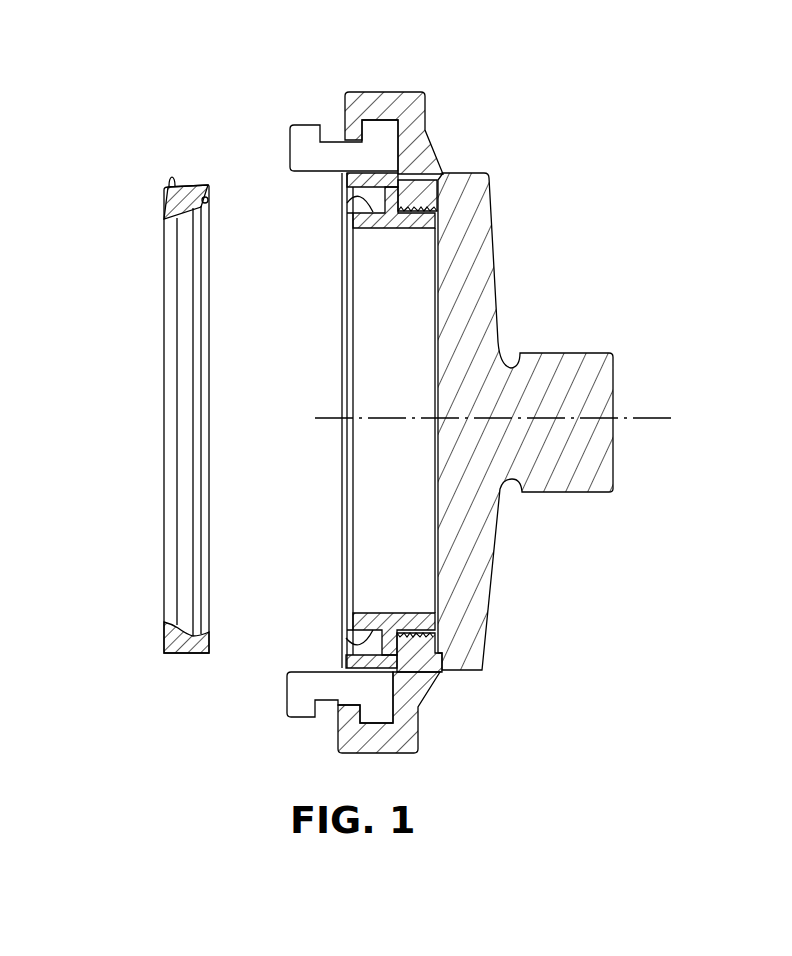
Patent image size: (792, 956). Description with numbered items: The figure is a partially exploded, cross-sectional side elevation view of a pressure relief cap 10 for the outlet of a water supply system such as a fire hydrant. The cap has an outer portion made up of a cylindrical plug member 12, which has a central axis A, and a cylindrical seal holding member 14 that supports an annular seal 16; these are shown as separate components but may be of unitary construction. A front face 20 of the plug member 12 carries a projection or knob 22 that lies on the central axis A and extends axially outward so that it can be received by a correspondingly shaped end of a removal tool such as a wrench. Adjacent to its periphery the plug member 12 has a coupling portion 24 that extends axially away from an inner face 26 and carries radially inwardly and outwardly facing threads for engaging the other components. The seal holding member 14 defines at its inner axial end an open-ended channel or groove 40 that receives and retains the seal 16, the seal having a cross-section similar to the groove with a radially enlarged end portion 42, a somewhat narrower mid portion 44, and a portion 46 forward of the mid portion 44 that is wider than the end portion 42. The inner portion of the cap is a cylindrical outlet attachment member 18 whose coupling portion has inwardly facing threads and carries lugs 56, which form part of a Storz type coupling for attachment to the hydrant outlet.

The pressure relief cap 10 is at (413, 78).
The plug member 12 is at (515, 268).
The seal holding member 14 is at (398, 608).
The annular seal 16 is at (185, 158).
The outlet attachment member 18 is at (350, 91).
The front face 20 is at (493, 568).
The knob 22 is at (569, 352).
The coupling portion 24 is at (446, 199).
The inner face 26 is at (433, 492).
The groove 40 is at (346, 205).
The end portion 42 is at (206, 201).
The mid portion 44 is at (193, 204).
The portion 46 is at (168, 182).
The lugs 56 is at (291, 150).
The central axis A is at (637, 417).